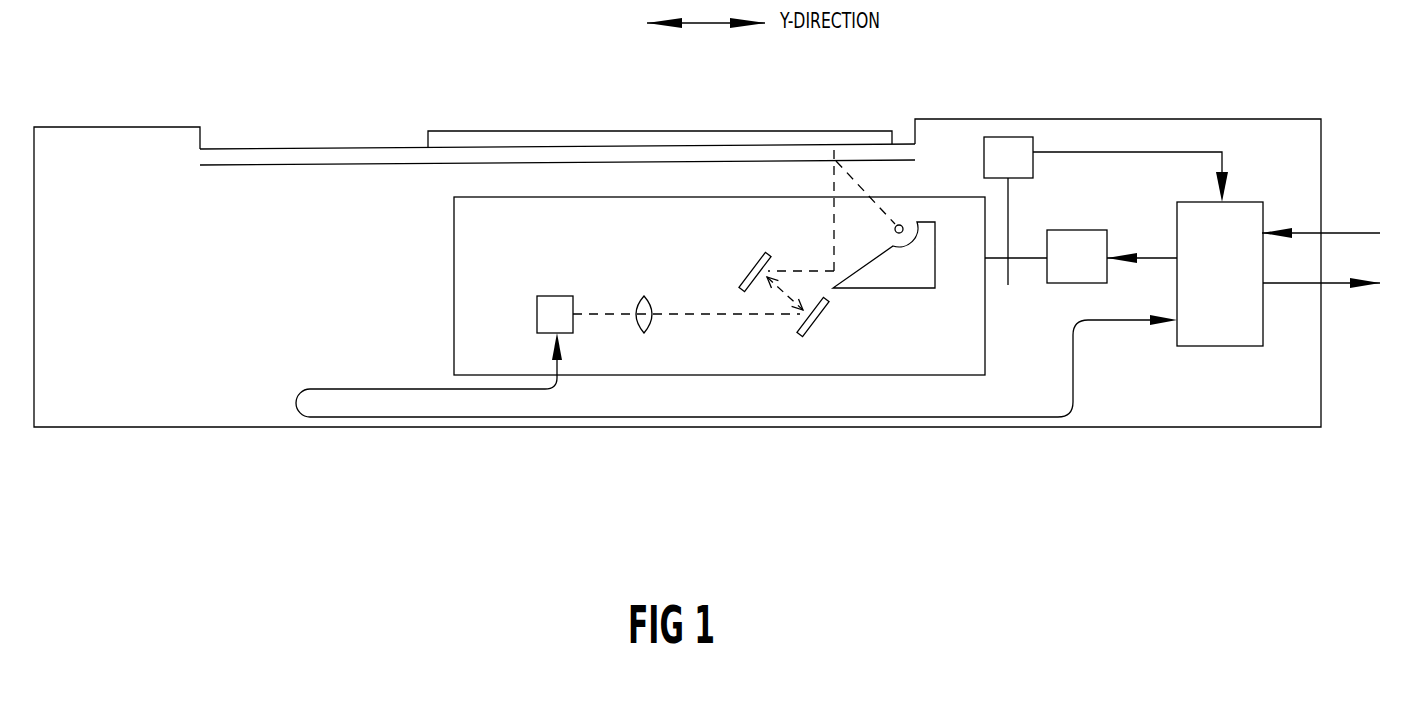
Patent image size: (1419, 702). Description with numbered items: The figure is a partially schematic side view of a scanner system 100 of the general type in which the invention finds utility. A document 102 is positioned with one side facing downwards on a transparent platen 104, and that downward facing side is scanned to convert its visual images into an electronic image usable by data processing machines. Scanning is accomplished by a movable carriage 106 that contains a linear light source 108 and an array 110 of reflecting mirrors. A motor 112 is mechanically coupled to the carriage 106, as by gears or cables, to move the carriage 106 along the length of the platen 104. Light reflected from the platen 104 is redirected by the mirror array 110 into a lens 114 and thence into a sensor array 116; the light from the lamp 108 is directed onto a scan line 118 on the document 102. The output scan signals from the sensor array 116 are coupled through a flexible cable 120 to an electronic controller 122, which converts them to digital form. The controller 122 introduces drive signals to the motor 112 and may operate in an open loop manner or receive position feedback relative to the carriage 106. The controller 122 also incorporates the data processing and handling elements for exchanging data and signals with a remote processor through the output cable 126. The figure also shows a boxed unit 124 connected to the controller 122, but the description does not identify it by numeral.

The scanner system 100 is at (58, 133).
The document 102 is at (548, 132).
The transparent platen 104 is at (260, 146).
The movable carriage 106 is at (454, 274).
The linear light source 108 is at (912, 217).
The array of reflecting mirrors 110 is at (811, 236).
The motor 112 is at (1095, 271).
The lens 114 is at (638, 298).
The sensor array 116 is at (569, 330).
The scan line 118 is at (835, 150).
The flexible cable 120 is at (1073, 347).
The electronic controller 122 is at (1239, 293).
The detector / sensor 124 is at (1027, 172).
The output cable 126 is at (1345, 225).